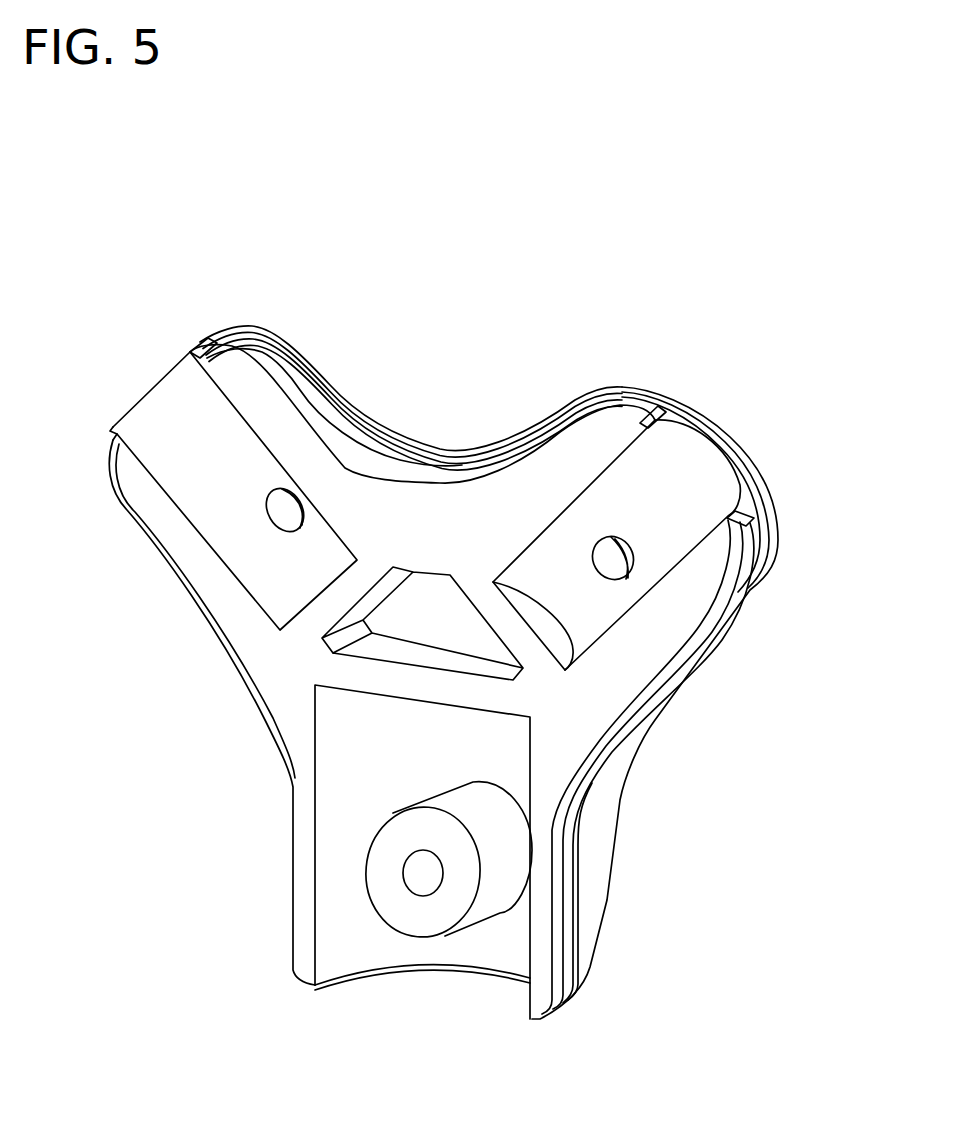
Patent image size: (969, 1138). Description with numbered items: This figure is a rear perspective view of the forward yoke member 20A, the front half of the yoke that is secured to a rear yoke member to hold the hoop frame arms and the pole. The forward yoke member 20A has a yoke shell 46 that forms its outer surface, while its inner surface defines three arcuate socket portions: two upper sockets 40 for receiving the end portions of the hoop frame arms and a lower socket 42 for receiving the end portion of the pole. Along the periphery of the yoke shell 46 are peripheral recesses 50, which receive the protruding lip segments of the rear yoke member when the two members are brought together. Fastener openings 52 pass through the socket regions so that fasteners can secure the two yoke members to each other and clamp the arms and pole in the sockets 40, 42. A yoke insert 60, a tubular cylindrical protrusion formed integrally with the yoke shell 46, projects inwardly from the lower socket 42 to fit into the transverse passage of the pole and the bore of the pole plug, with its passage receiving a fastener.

The forward yoke member 20A is at (760, 211).
The upper socket 40 is at (200, 441).
The lower socket 42 is at (392, 764).
The yoke shell 46 is at (641, 734).
The peripheral recess 50 is at (372, 450).
The fastener opening 52 is at (282, 512).
The yoke insert 60 is at (490, 900).